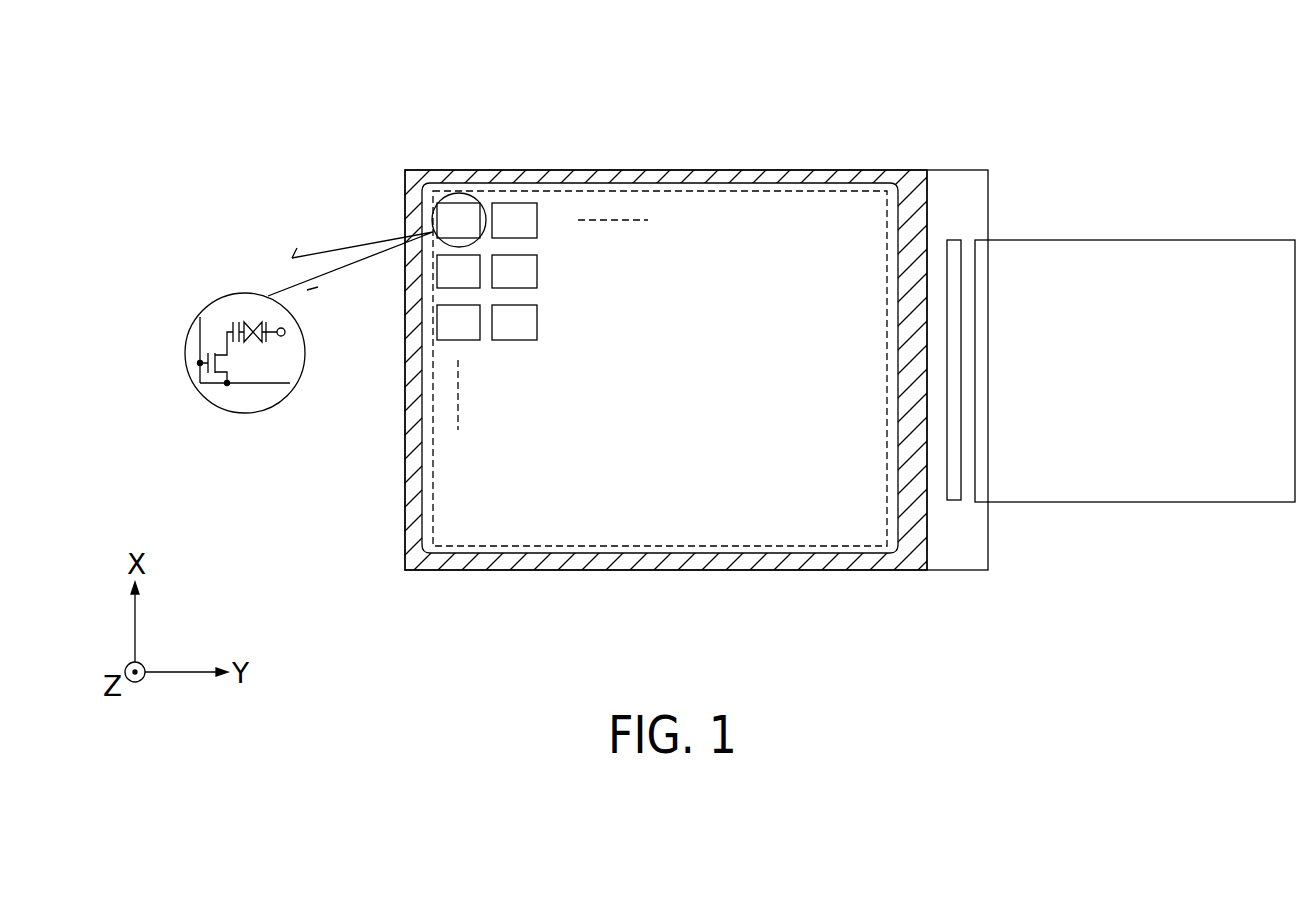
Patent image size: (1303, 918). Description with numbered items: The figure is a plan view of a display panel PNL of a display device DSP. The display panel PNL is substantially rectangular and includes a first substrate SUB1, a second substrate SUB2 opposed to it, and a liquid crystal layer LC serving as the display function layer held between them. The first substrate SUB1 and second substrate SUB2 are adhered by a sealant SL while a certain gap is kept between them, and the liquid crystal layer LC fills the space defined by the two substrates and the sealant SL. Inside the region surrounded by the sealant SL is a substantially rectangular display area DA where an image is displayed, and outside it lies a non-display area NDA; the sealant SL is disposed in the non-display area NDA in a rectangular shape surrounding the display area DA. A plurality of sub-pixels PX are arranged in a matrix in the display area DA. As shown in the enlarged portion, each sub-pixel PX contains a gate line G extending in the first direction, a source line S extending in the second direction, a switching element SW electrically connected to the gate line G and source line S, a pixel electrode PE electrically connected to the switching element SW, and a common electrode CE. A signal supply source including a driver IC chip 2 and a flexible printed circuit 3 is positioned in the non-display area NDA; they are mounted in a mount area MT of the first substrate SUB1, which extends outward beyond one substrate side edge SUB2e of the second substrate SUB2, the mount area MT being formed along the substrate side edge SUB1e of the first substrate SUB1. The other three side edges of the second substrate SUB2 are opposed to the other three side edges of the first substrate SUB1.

The display device DSP is at (1151, 113).
The display panel PNL is at (980, 162).
The first substrate SUB1 is at (948, 553).
The second substrate SUB2 is at (834, 532).
The substrate side edge of the first substrate SUB1e is at (990, 194).
The substrate side edge of the second substrate SUB2e is at (928, 198).
The sealant SL is at (717, 170).
The display area DA is at (775, 548).
The non-display area NDA is at (891, 524).
The sub-pixel PX is at (458, 193).
The mount area MT is at (966, 500).
The driver IC chip 2 is at (958, 240).
The flexible printed circuit 3 is at (1220, 240).
The switching element SW is at (232, 362).
The gate line G is at (200, 347).
The source line S is at (255, 385).
The pixel electrode PE is at (230, 321).
The common electrode CE is at (287, 337).
The liquid crystal layer LC is at (247, 321).